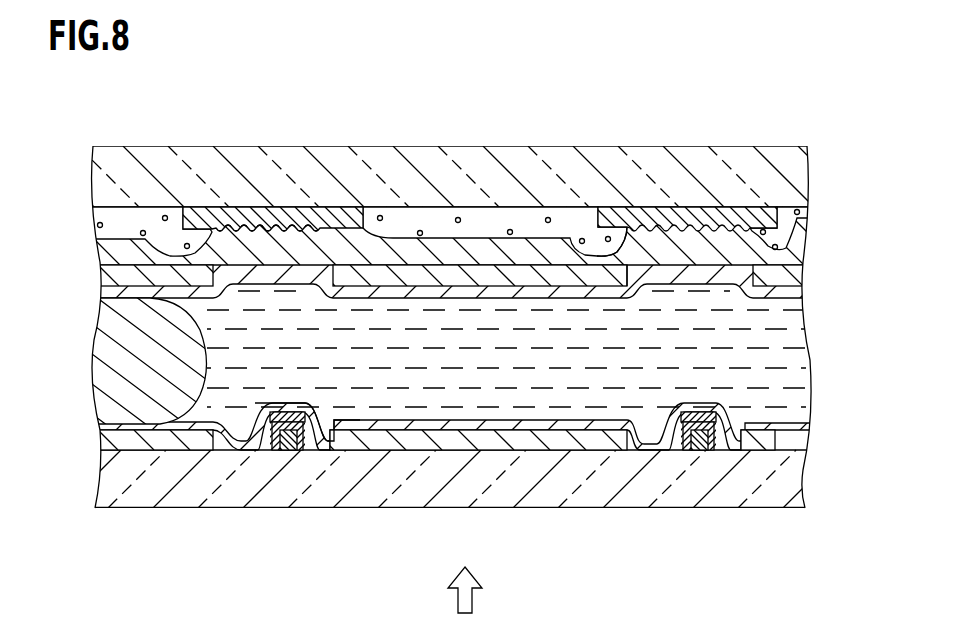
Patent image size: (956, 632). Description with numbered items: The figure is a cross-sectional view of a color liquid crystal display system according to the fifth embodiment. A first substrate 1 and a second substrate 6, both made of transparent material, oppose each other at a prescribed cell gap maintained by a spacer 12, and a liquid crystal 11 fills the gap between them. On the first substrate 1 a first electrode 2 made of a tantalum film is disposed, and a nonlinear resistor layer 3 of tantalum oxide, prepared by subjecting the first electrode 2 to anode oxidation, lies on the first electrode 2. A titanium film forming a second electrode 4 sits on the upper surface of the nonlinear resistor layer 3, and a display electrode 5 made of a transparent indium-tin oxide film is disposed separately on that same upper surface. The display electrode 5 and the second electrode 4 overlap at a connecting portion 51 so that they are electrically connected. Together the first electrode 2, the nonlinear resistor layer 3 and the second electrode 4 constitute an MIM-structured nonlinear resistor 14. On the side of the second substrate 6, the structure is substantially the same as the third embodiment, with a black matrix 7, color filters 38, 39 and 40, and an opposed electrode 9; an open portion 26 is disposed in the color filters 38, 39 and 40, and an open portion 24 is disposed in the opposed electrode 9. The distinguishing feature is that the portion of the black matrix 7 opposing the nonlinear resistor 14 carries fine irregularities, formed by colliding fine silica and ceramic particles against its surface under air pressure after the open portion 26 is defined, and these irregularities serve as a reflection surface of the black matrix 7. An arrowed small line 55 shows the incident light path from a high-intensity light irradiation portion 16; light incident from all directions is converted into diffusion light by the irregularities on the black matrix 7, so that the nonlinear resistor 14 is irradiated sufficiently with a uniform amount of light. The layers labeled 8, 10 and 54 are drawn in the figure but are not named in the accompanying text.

The first substrate 1 is at (783, 482).
The first electrode 2 is at (288, 450).
The nonlinear resistor layer 3 is at (302, 450).
The second electrode 4 is at (353, 450).
The display electrode 5 is at (510, 450).
The second substrate 6 is at (782, 175).
The black matrix 7 is at (297, 212).
The overcoat layer 8 is at (797, 258).
The opposed electrode 9 is at (98, 278).
The alignment film 10 is at (800, 420).
The liquid crystal 11 is at (797, 358).
The spacer 12 is at (98, 407).
The nonlinear resistor 14 is at (301, 402).
The high-intensity light irradiation portion 16 is at (470, 597).
The open portion 24 is at (628, 273).
The open portion 26 is at (623, 243).
The color filter 38 is at (530, 220).
The color filter 39 is at (800, 227).
The color filter 40 is at (93, 222).
The connecting portion 51 is at (347, 423).
The spacer 54 is at (280, 397).
The arrowed small line 55 is at (258, 229).